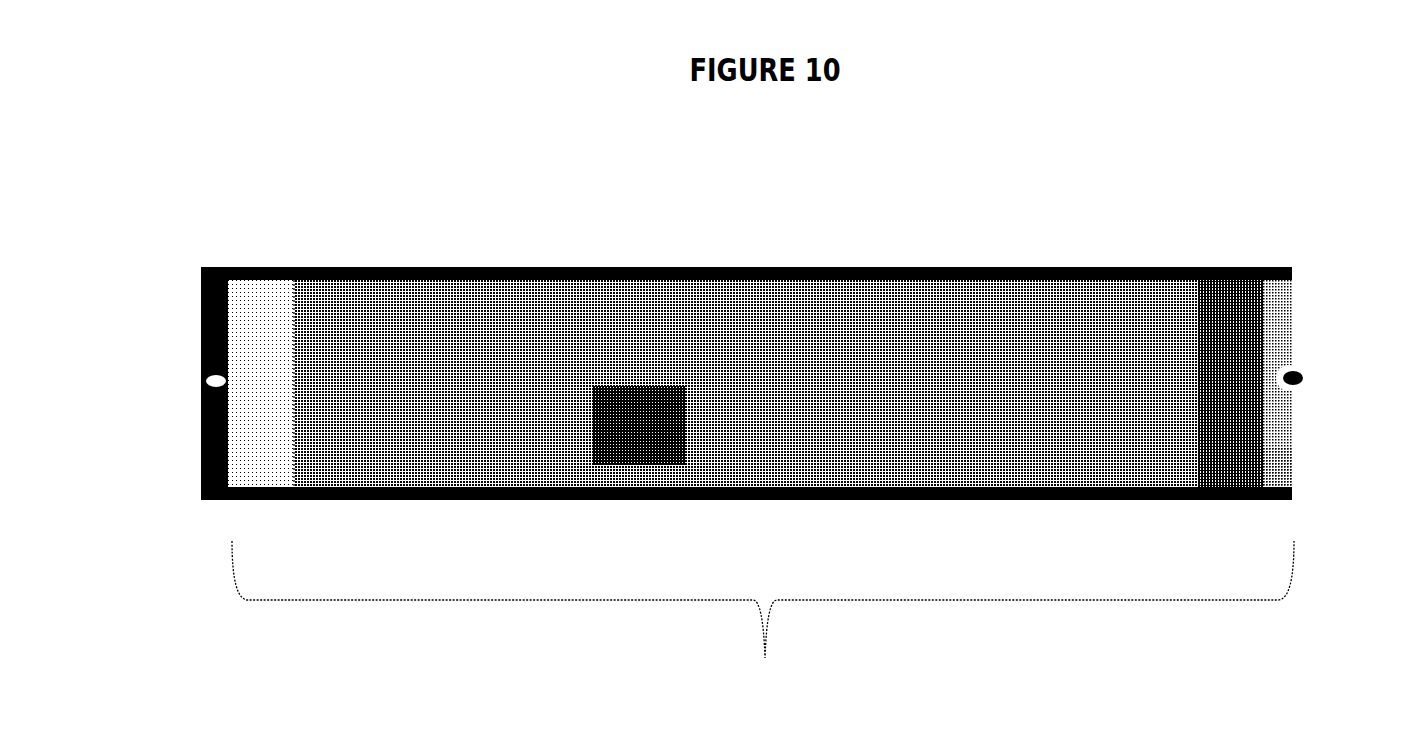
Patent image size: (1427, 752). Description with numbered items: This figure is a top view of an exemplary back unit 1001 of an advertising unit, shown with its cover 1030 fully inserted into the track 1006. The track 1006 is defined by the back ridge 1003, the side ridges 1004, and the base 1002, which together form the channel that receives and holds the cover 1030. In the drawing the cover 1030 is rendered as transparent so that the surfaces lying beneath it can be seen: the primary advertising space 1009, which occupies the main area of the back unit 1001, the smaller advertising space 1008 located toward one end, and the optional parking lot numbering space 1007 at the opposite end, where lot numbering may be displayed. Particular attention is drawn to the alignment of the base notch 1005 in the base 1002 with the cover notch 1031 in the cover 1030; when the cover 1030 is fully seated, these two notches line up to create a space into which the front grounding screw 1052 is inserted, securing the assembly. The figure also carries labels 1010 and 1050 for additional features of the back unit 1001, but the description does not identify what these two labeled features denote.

The back unit 1001 is at (746, 363).
The base 1002 is at (1283, 467).
The back ridge 1003 is at (190, 447).
The side ridges 1004 is at (1203, 247).
The base notch 1005 is at (1288, 355).
The track 1006 is at (1286, 265).
The parking lot numbering space 1007 is at (246, 457).
The smaller advertising space 1008 is at (1210, 482).
The primary advertising space 1009 is at (917, 440).
The patch region 1010 is at (655, 450).
The cover 1030 is at (763, 618).
The cover notch 1031 is at (1291, 387).
The left aperture 1050 is at (190, 372).
The front grounding screw 1052 is at (1300, 370).